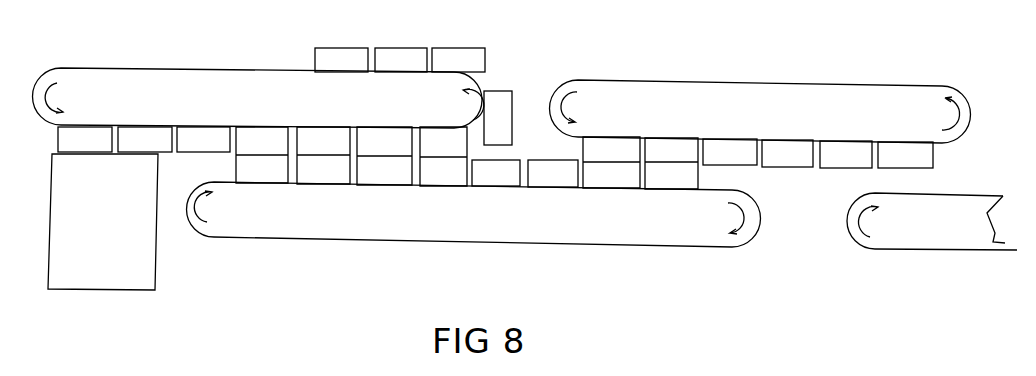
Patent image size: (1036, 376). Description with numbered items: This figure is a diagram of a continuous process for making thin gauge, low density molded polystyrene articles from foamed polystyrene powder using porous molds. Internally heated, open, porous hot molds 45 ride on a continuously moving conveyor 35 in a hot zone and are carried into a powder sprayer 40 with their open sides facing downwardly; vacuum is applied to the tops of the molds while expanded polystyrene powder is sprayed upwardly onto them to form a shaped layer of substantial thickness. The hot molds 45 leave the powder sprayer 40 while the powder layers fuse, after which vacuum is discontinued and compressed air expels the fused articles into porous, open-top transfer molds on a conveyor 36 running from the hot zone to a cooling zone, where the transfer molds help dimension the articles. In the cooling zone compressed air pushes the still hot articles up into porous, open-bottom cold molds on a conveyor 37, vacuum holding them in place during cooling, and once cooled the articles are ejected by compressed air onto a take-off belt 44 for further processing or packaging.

The conveyor 35 is at (173, 67).
The hot molds 45 is at (340, 45).
The conveyor 37 is at (802, 83).
The powder sprayer 40 is at (157, 240).
The conveyor 36 is at (495, 242).
The take-off belt 44 is at (920, 250).